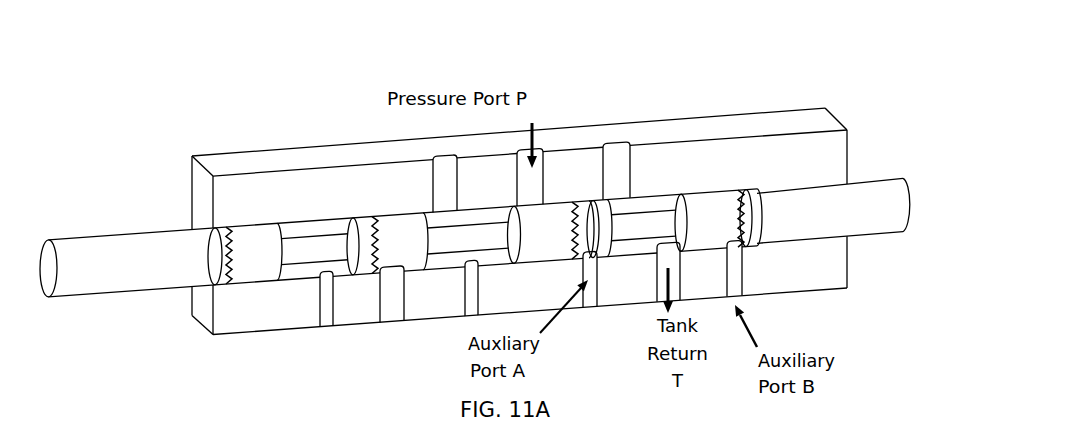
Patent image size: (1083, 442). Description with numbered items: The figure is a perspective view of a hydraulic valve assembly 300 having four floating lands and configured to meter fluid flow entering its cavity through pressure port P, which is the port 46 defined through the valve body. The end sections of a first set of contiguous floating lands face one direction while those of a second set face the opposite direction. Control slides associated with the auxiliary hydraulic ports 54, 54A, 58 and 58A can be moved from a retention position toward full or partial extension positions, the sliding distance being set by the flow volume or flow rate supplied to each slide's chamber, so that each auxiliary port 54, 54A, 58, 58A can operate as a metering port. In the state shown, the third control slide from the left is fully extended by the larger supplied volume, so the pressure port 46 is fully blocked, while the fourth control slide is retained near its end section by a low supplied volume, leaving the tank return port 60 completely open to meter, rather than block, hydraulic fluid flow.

The hydraulic valve assembly 300 is at (765, 45).
The port 46 is at (535, 178).
The auxiliary hydraulic port 54 is at (475, 292).
The auxiliary hydraulic port 54A is at (328, 305).
The auxiliary hydraulic port 58 is at (585, 290).
The auxiliary hydraulic port 58A is at (735, 280).
The port 60 is at (677, 270).